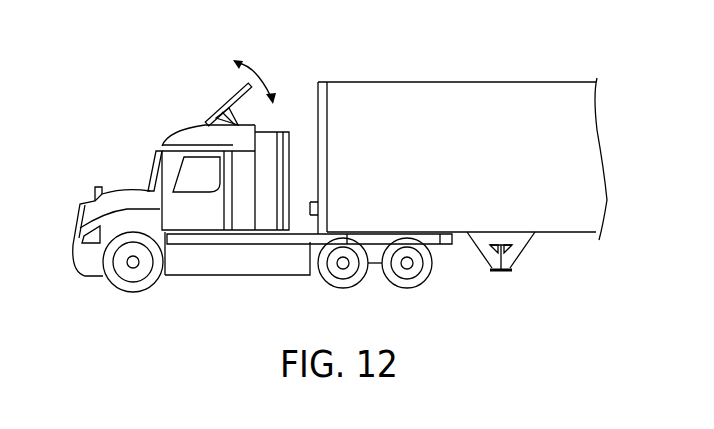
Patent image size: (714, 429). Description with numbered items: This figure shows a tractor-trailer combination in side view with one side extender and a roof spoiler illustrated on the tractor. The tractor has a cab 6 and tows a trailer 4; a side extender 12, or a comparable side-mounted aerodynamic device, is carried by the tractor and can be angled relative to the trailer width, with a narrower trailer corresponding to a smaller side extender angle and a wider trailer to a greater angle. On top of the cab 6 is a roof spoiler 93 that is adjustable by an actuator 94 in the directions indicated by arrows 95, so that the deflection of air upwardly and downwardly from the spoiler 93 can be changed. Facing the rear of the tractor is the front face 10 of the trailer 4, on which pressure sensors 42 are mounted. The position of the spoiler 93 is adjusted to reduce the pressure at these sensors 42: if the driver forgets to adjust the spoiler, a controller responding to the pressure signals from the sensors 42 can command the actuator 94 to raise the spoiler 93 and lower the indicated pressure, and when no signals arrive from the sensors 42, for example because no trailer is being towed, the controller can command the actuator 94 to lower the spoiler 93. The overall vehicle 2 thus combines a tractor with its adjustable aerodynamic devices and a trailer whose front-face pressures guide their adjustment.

The vehicle (tractor-trailer truck) 2 is at (114, 167).
The trailer 4 is at (472, 104).
The cab 6 is at (178, 143).
The front face of the trailer 10 is at (317, 100).
The side extender 12 is at (267, 223).
The pressure sensors 42 is at (320, 82).
The roof spoiler 93 is at (224, 112).
The actuator 94 is at (218, 116).
The arrows 95 is at (262, 70).